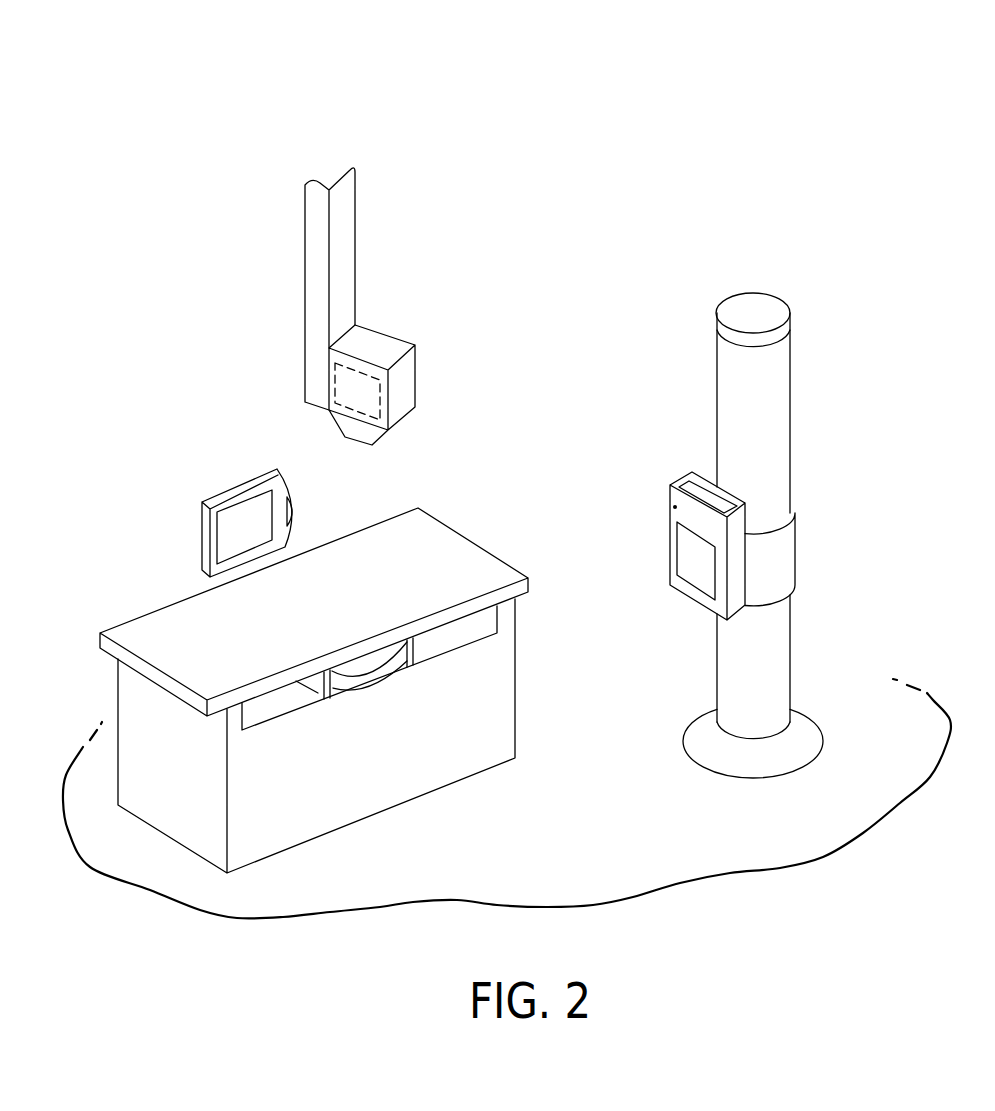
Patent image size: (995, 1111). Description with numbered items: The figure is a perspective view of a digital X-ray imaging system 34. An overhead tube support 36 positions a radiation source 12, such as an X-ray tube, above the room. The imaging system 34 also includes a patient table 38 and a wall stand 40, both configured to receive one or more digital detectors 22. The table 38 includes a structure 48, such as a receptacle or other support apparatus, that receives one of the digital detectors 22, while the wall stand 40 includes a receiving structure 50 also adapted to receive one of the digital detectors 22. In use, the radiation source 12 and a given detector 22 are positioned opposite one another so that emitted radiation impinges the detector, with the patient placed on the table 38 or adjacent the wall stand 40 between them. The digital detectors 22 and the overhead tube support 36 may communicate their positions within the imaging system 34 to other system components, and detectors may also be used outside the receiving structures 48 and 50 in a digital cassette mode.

The radiation source 12 is at (381, 396).
The digital detector 22 is at (205, 540).
The imaging system 34 is at (588, 58).
The overhead tube support 36 is at (347, 252).
The patient table 38 is at (408, 788).
The wall stand 40 is at (783, 645).
The structure 48 is at (317, 682).
The receiving structure 50 is at (670, 531).